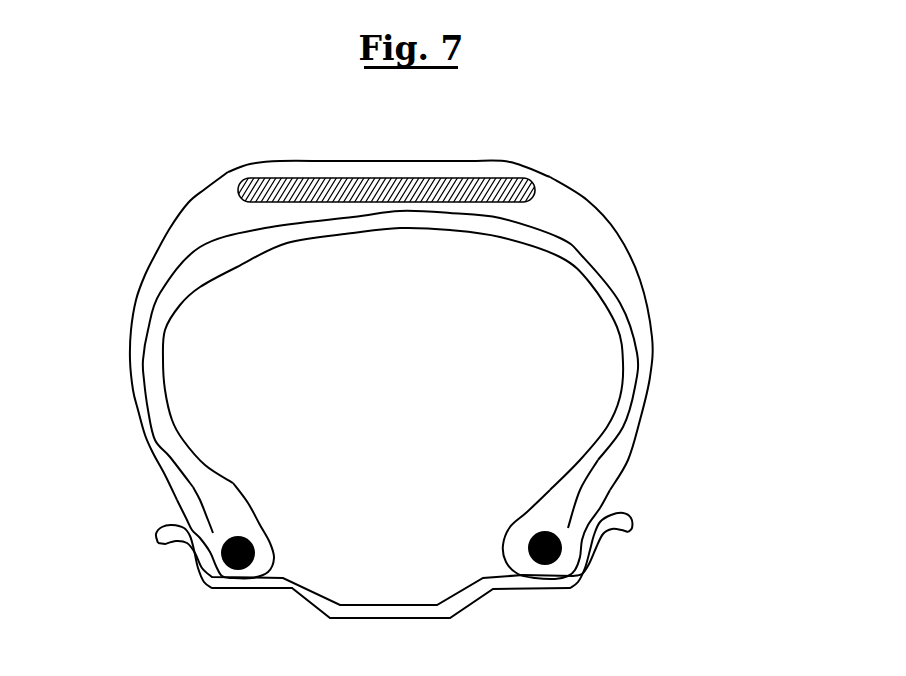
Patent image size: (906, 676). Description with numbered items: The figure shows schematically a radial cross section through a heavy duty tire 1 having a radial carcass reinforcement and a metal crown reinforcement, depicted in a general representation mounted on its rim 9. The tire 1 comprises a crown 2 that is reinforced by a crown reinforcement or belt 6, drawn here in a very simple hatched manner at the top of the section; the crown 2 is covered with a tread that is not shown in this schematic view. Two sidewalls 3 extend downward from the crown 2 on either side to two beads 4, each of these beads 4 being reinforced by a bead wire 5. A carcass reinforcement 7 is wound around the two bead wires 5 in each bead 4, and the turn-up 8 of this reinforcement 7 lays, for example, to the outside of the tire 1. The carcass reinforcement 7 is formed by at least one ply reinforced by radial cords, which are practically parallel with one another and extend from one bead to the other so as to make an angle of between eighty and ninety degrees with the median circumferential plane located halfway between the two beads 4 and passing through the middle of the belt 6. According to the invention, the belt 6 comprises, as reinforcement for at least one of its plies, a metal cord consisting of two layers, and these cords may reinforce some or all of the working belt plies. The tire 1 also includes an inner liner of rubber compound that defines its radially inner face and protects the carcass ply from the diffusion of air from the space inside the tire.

The tire 1 is at (662, 308).
The crown 2 is at (468, 172).
The sidewall 3 is at (137, 367).
The bead 4 is at (263, 568).
The bead wire 5 is at (257, 550).
The crown reinforcement or belt 6 is at (383, 178).
The carcass reinforcement 7 is at (160, 292).
The turn-up 8 is at (215, 540).
The rim 9 is at (202, 560).